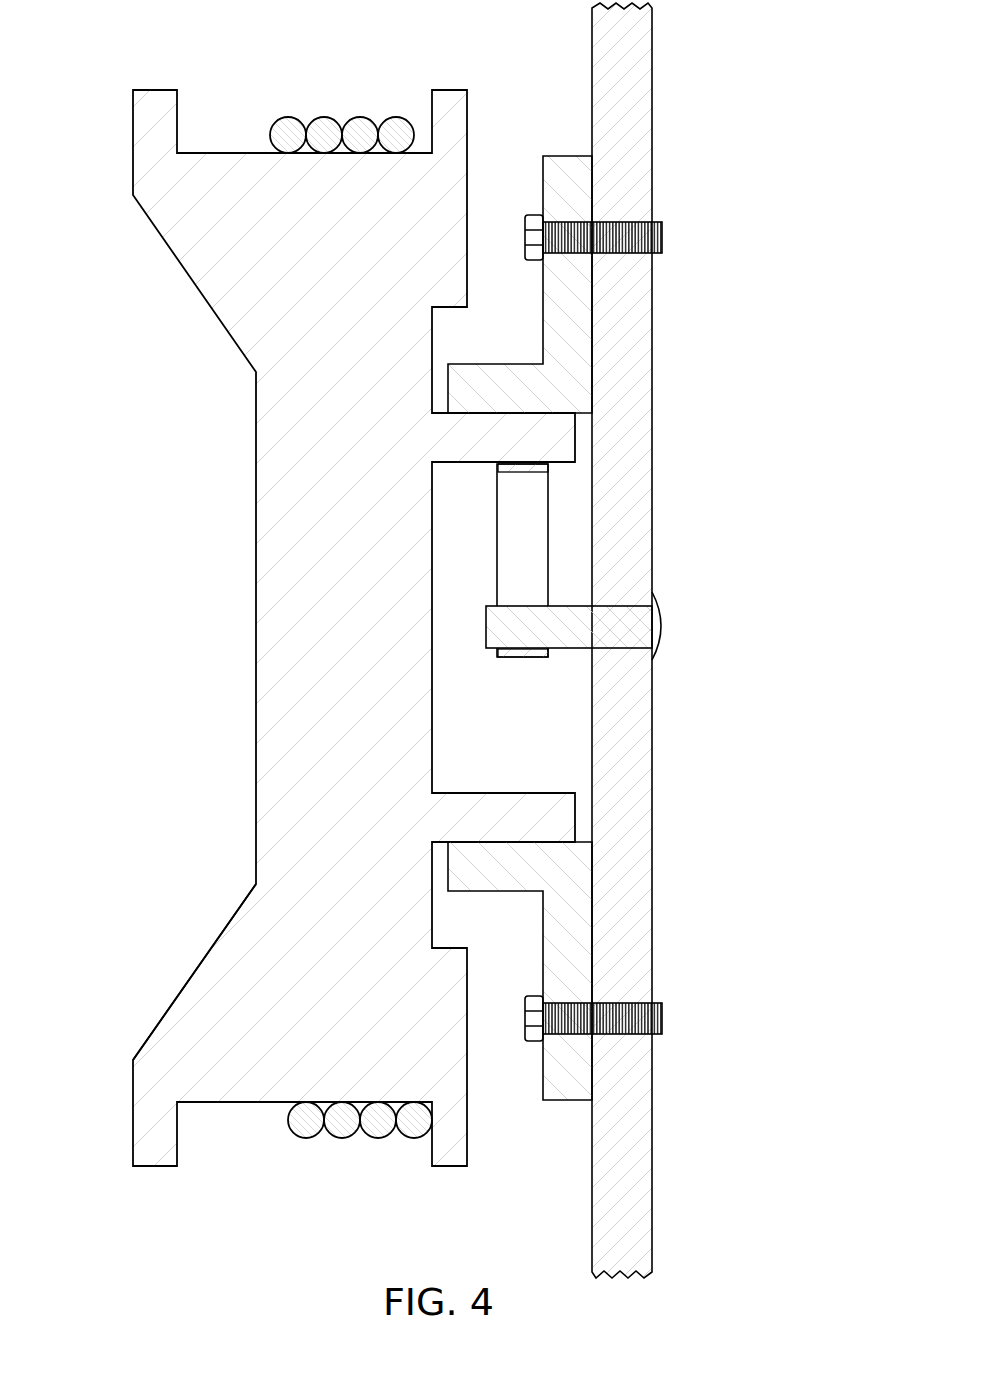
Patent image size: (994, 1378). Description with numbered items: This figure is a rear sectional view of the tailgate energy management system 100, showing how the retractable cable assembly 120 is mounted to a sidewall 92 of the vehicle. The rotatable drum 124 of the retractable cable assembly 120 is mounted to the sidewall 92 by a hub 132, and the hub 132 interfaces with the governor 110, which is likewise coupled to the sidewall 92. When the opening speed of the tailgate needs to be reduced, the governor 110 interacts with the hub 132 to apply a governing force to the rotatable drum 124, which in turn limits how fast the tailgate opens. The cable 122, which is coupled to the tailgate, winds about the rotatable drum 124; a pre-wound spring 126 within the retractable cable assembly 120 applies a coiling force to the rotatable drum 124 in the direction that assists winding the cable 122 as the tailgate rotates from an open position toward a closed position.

The sidewall 92 is at (652, 45).
The tailgate energy management system 100 is at (770, 145).
The governor 110 is at (492, 363).
The retractable cable assembly 120 is at (172, 533).
The cable 122 is at (342, 1139).
The rotatable drum 124 is at (208, 950).
The pre-wound spring 126 is at (497, 531).
The hub 132 is at (506, 792).